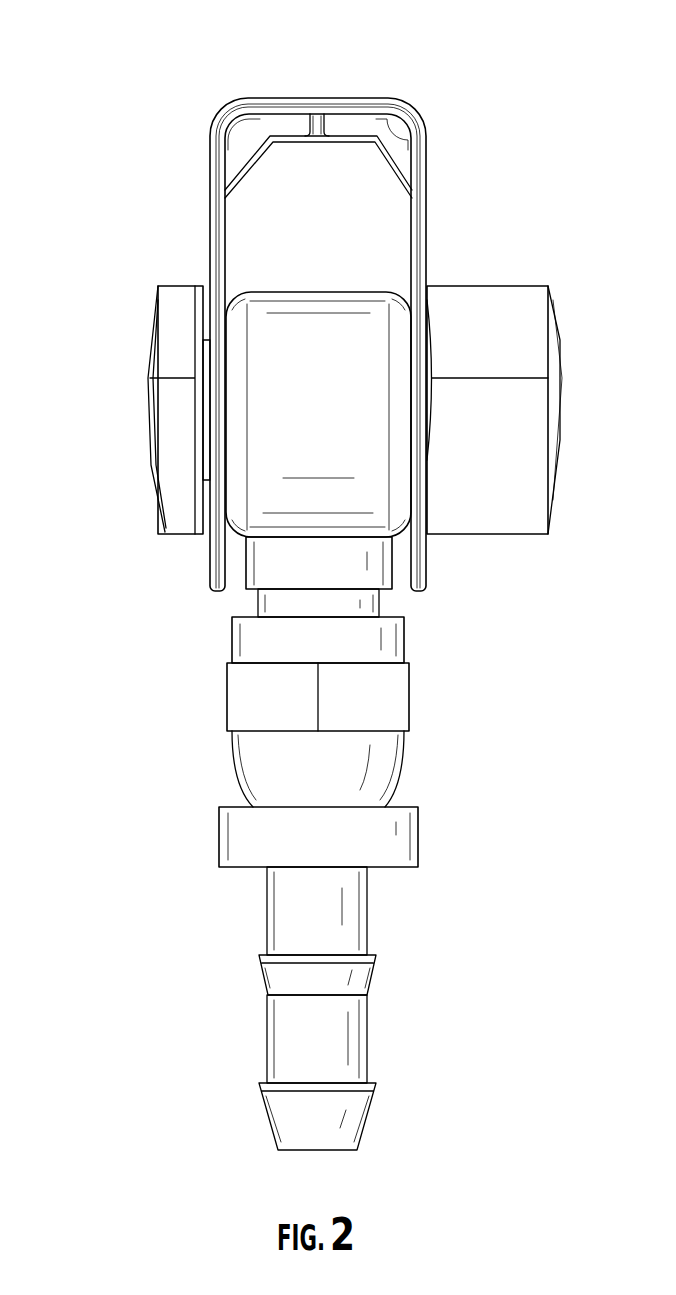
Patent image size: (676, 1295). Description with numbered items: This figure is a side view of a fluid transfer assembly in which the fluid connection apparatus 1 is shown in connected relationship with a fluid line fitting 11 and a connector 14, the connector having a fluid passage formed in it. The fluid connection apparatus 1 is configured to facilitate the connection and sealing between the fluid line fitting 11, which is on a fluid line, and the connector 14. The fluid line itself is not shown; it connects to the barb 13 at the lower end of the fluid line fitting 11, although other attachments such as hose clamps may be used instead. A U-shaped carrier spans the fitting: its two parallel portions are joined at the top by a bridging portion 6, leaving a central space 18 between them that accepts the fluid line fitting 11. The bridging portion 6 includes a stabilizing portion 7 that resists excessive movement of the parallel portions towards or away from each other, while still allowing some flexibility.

The fluid connection apparatus 1 is at (190, 190).
The bridging portion 6 is at (336, 98).
The stabilizing portion 7 is at (318, 140).
The fluid line fitting 11 is at (285, 440).
The barb 13 is at (418, 838).
The connector 14 is at (145, 405).
The central space 18 is at (332, 576).